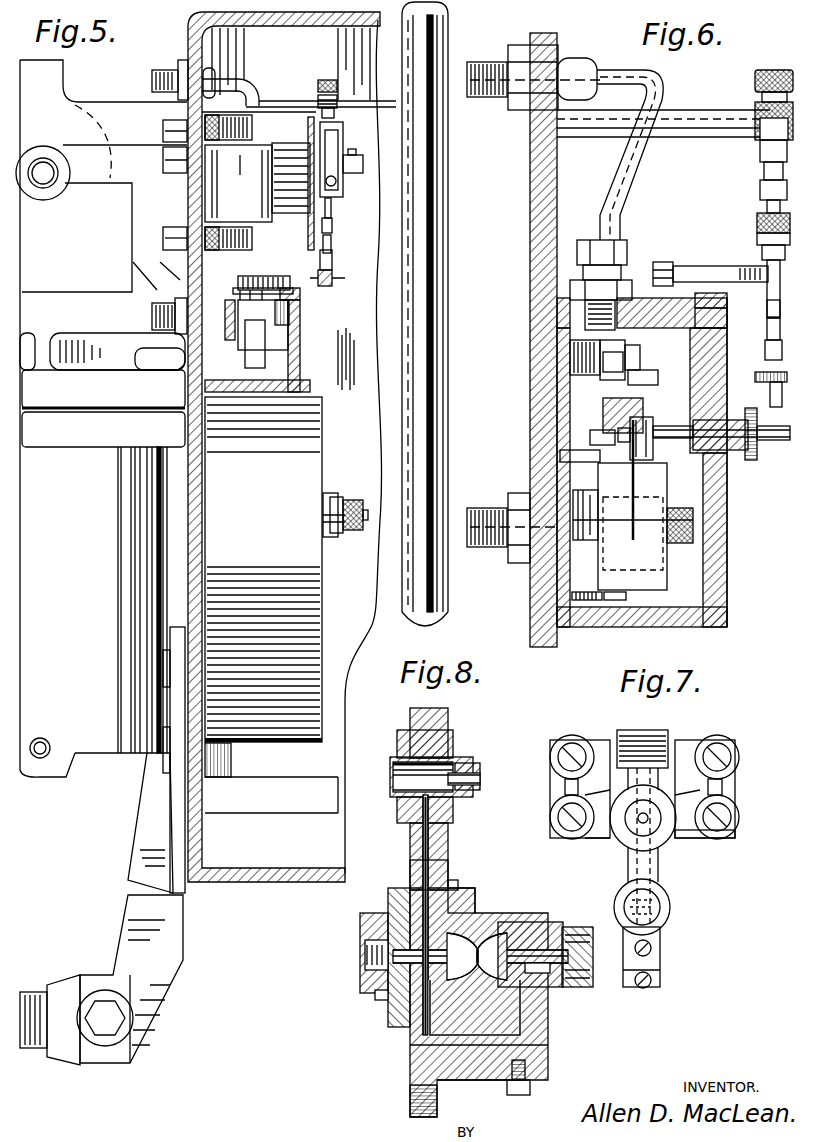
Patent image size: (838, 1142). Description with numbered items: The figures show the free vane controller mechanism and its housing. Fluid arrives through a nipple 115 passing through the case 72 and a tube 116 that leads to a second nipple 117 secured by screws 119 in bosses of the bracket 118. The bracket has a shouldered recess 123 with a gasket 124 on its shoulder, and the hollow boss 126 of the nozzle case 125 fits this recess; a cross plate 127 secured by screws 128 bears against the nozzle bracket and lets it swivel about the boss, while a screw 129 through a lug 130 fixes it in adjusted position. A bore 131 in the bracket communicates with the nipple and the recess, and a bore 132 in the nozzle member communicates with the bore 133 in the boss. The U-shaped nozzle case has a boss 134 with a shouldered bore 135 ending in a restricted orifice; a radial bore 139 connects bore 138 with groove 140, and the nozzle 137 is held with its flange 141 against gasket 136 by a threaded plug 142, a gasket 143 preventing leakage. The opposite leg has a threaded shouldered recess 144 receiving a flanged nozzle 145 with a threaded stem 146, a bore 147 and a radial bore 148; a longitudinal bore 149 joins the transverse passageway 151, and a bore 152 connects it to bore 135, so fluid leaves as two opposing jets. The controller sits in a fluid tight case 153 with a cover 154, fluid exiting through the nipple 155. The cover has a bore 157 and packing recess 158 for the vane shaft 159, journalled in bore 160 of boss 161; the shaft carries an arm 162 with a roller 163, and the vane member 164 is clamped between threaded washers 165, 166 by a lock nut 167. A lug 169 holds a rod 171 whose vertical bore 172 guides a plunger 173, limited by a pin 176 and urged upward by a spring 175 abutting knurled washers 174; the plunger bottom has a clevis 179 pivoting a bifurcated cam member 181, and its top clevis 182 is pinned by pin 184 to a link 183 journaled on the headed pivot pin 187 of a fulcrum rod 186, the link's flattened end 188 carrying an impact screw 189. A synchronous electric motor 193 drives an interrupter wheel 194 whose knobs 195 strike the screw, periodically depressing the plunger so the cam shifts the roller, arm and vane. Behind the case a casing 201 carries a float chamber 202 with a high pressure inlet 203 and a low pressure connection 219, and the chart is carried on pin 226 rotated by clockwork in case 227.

In FIG. 5, the case 72 is at (282, 882).
In FIG. 6, the case 72 is at (530, 185).
In FIG. 5, the nipple 115 is at (170, 75).
In FIG. 6, the nipple 115 is at (497, 62).
In FIG. 5, the tube 116 is at (250, 99).
In FIG. 6, the tube 116 is at (622, 212).
In FIG. 6, the nipple 117 is at (612, 268).
In FIG. 5, the bracket 118 is at (205, 268).
In FIG. 6, the bracket 118 is at (570, 400).
In FIG. 7, the bracket 118 is at (735, 785).
In FIG. 6, the screws 119 is at (645, 360).
In FIG. 7, the screws 119 is at (563, 740).
In FIG. 6, the shouldered recess 123 is at (570, 420).
In FIG. 6, the gasket 124 is at (542, 462).
In FIG. 6, the nozzle case 125 is at (640, 506).
In FIG. 7, the nozzle case 125 is at (660, 872).
In FIG. 8, the nozzle case 125 is at (447, 852).
In FIG. 6, the hollow boss 126 is at (627, 358).
In FIG. 8, the hollow boss 126 is at (408, 728).
In FIG. 6, the cross plate 127 is at (655, 378).
In FIG. 7, the cross plate 127 is at (700, 840).
In FIG. 7, the screws 128 is at (735, 805).
In FIG. 6, the screw 129 is at (588, 602).
In FIG. 7, the screw 129 is at (651, 950).
In FIG. 6, the lug 130 is at (612, 602).
In FIG. 7, the lug 130 is at (651, 982).
In FIG. 8, the lug 130 is at (410, 1100).
In FIG. 6, the bore 131 is at (562, 378).
In FIG. 7, the bore 131 is at (620, 752).
In FIG. 6, the bore 132 is at (636, 462).
In FIG. 7, the bore 132 is at (652, 868).
In FIG. 8, the bore 132 is at (448, 866).
In FIG. 6, the bore 133 is at (590, 438).
In FIG. 8, the bore 133 is at (450, 760).
In FIG. 7, the boss 134 is at (670, 907).
In FIG. 8, the boss 134 is at (472, 905).
In FIG. 8, the shouldered bore 135 is at (415, 890).
In FIG. 8, the gasket 136 is at (395, 1010).
In FIG. 8, the nozzle 137 is at (470, 935).
In FIG. 8, the bore 138 is at (502, 938).
In FIG. 8, the radial bore 139 is at (362, 935).
In FIG. 8, the groove 140 is at (456, 890).
In FIG. 8, the flange 141 is at (375, 995).
In FIG. 8, the threaded plug 142 is at (365, 972).
In FIG. 8, the gasket 143 is at (362, 952).
In FIG. 8, the shouldered recess 144 is at (560, 922).
In FIG. 8, the flanged nozzle 145 is at (466, 1080).
In FIG. 8, the threaded stem 146 is at (550, 985).
In FIG. 8, the bore 147 is at (575, 940).
In FIG. 8, the radial bore 148 is at (548, 1010).
In FIG. 8, the longitudinal bore 149 is at (530, 1085).
In FIG. 8, the transverse passageway 151 is at (430, 1055).
In FIG. 8, the bore 152 is at (430, 1020).
In FIG. 5, the case 153 is at (263, 569).
In FIG. 6, the case 153 is at (680, 628).
In FIG. 5, the cover 154 is at (279, 340).
In FIG. 6, the cover 154 is at (722, 550).
In FIG. 5, the nipple 155 is at (152, 316).
In FIG. 6, the nipple 155 is at (495, 548).
In FIG. 6, the bore 157 is at (730, 452).
In FIG. 6, the packing recess 158 is at (750, 461).
In FIG. 5, the vane shaft 159 is at (280, 280).
In FIG. 6, the vane shaft 159 is at (768, 352).
In FIG. 7, the bore 160 is at (626, 826).
In FIG. 8, the bore 160 is at (468, 766).
In FIG. 7, the boss 161 is at (652, 835).
In FIG. 8, the boss 161 is at (452, 792).
In FIG. 5, the arm 162 is at (334, 278).
In FIG. 6, the arm 162 is at (790, 366).
In FIG. 5, the roller 163 is at (334, 262).
In FIG. 6, the roller 163 is at (772, 395).
In FIG. 5, the vane member 164 is at (248, 322).
In FIG. 6, the vane member 164 is at (636, 482).
In FIG. 6, the threaded washer 165 is at (645, 395).
In FIG. 6, the threaded washer 166 is at (640, 428).
In FIG. 6, the lock nut 167 is at (664, 425).
In FIG. 6, the lug 169 is at (688, 262).
In FIG. 6, the rod 171 is at (760, 268).
In FIG. 6, the vertical bore 172 is at (727, 300).
In FIG. 5, the plunger 173 is at (332, 210).
In FIG. 6, the plunger 173 is at (727, 318).
In FIG. 6, the knurled washers 174 is at (757, 220).
In FIG. 6, the spring 175 is at (757, 238).
In FIG. 6, the pin 176 is at (762, 252).
In FIG. 5, the clevis 179 is at (333, 226).
In FIG. 6, the clevis 179 is at (780, 315).
In FIG. 5, the bifurcated cam member 181 is at (333, 244).
In FIG. 6, the bifurcated cam member 181 is at (768, 338).
In FIG. 6, the clevis 182 is at (760, 190).
In FIG. 6, the link 183 is at (764, 172).
In FIG. 6, the pin 184 is at (760, 156).
In FIG. 5, the fulcrum rod 186 is at (293, 96).
In FIG. 6, the fulcrum rod 186 is at (682, 110).
In FIG. 5, the headed pivot pin 187 is at (334, 116).
In FIG. 6, the headed pivot pin 187 is at (796, 100).
In FIG. 5, the flattened end 188 is at (337, 100).
In FIG. 6, the flattened end 188 is at (760, 118).
In FIG. 5, the impact screw 189 is at (316, 66).
In FIG. 6, the impact screw 189 is at (761, 72).
In FIG. 5, the synchronous electric motor 193 is at (228, 182).
In FIG. 5, the interrupter wheel 194 is at (338, 186).
In FIG. 5, the knobs 195 is at (334, 180).
In FIG. 5, the casing 201 is at (177, 148).
In FIG. 5, the float chamber 202 is at (98, 544).
In FIG. 5, the high pressure inlet 203 is at (45, 758).
In FIG. 5, the low pressure connection 219 is at (63, 152).
In FIG. 5, the pin 226 is at (347, 492).
In FIG. 5, the case 227 is at (293, 742).